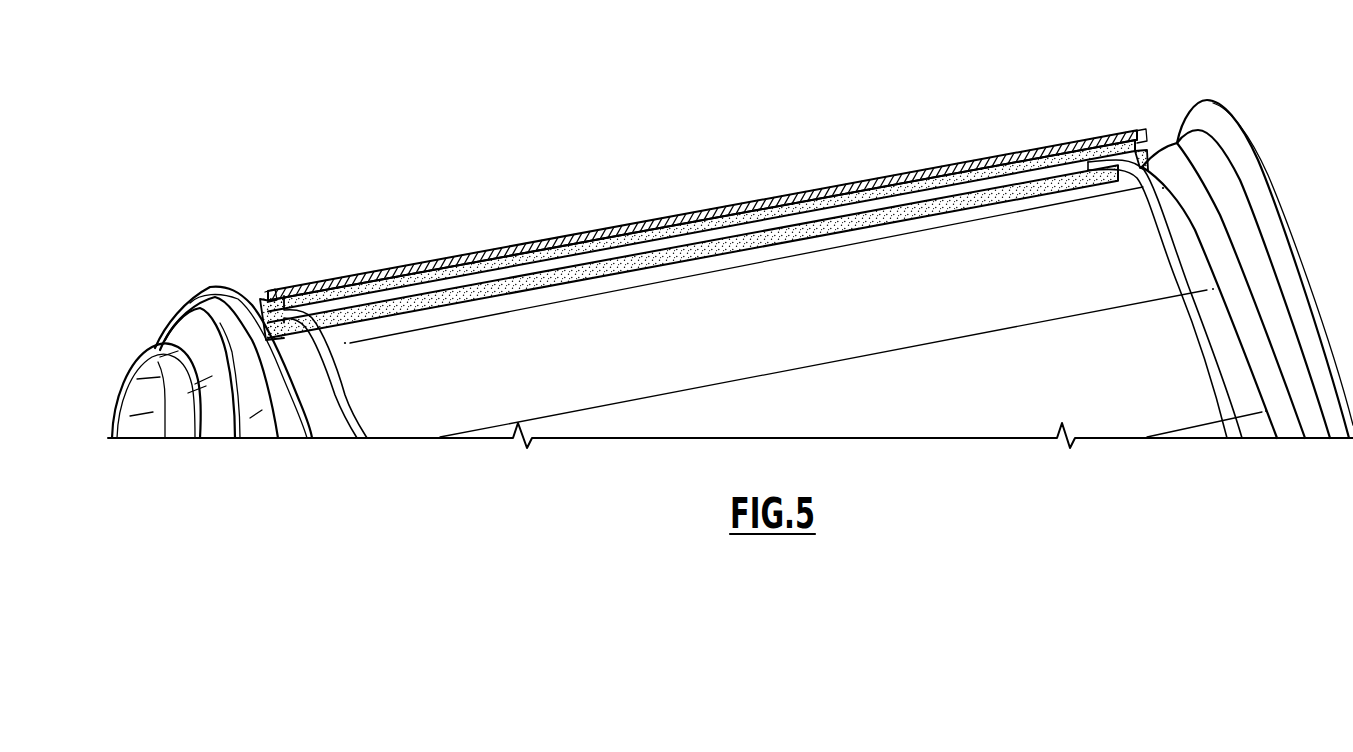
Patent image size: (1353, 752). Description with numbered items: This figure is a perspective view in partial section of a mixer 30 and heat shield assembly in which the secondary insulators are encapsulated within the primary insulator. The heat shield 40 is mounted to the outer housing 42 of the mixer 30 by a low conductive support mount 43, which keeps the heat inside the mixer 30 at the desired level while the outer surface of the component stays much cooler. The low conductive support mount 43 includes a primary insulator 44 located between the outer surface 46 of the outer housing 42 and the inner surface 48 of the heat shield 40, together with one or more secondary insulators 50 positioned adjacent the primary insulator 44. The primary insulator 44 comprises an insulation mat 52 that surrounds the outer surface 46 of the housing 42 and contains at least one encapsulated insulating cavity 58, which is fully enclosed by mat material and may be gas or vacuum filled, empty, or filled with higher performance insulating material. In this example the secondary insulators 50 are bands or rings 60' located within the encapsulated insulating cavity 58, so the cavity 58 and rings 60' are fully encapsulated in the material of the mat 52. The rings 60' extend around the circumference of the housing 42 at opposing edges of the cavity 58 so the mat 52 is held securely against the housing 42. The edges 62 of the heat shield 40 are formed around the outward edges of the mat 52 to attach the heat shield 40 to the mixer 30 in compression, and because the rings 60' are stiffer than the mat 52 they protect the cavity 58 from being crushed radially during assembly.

The mixer 30 is at (409, 101).
The heat shield 40 is at (706, 201).
The outer housing 42 is at (1222, 128).
The low conductive support mount 43 is at (1110, 210).
The primary insulator 44 is at (1077, 152).
The outer surface 46 is at (1143, 167).
The inner surface 48 is at (930, 178).
The secondary insulator 50 is at (392, 396).
The insulation mat 52 is at (486, 292).
The encapsulated insulating cavity 58 is at (610, 243).
The bands or rings 60' is at (763, 299).
The edges of the heat shield 62 is at (257, 300).